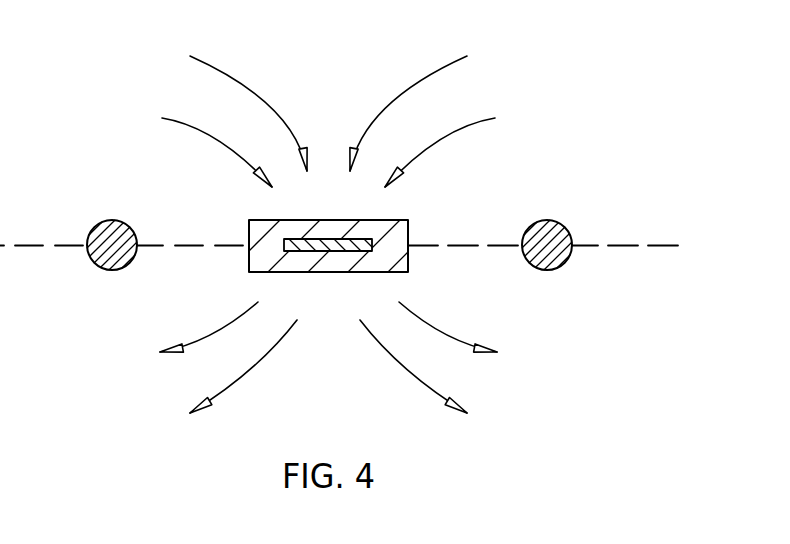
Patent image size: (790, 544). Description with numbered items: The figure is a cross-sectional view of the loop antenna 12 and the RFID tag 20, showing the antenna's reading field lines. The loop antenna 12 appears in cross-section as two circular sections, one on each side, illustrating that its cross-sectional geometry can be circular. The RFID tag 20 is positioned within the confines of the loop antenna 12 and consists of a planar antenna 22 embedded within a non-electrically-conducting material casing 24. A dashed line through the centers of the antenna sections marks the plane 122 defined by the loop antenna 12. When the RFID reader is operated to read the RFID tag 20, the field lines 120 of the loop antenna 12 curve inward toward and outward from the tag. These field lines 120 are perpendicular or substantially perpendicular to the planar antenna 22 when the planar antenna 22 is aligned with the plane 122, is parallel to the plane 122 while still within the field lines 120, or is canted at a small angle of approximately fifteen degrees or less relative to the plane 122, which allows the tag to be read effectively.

The loop antenna 12 is at (100, 268).
The RFID tag 20 is at (351, 231).
The planar antenna 22 is at (283, 243).
The non-electrically-conducting material casing 24 is at (407, 262).
The field lines 120 is at (388, 103).
The plane 122 is at (629, 244).